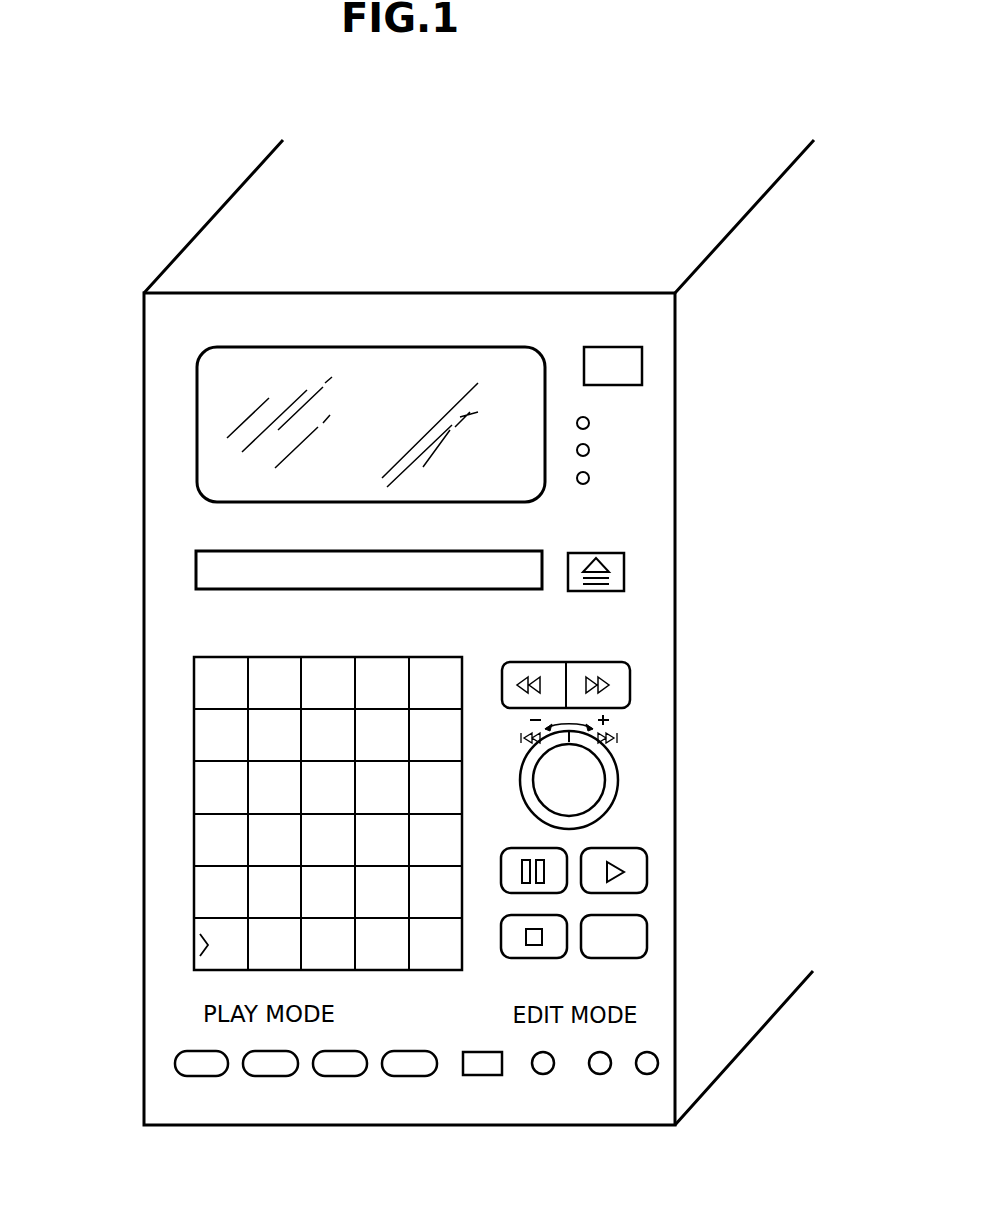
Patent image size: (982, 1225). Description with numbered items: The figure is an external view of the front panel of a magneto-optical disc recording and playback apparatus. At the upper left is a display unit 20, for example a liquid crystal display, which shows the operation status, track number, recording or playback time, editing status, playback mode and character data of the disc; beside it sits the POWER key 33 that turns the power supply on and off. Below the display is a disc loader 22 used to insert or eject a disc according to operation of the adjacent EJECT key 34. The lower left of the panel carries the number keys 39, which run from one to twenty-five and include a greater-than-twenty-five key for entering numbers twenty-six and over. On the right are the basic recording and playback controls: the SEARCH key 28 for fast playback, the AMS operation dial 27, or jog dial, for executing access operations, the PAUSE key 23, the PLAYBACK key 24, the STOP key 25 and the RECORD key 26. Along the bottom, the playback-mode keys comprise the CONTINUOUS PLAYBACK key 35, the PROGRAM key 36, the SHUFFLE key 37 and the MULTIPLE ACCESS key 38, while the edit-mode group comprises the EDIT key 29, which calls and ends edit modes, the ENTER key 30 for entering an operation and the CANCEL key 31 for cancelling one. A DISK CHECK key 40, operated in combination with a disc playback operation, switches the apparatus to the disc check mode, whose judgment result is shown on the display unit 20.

The display unit 20 is at (197, 380).
The disc loader 22 is at (196, 568).
The PAUSE key 23 is at (563, 849).
The PLAYBACK key 24 is at (647, 870).
The STOP key 25 is at (563, 956).
The RECORD key 26 is at (647, 928).
The AMS operation dial 27 is at (597, 780).
The SEARCH key 28 is at (630, 686).
The EDIT key 29 is at (554, 1060).
The ENTER key 30 is at (600, 1052).
The CANCEL key 31 is at (658, 1063).
The POWER key 33 is at (642, 372).
The EJECT key 34 is at (624, 572).
The CONTINUOUS PLAYBACK key 35 is at (200, 1076).
The PROGRAM key 36 is at (267, 1076).
The SHUFFLE key 37 is at (332, 1076).
The MULTIPLE ACCESS key 38 is at (404, 1076).
The number keys 39 is at (192, 730).
The DISK CHECK key 40 is at (502, 1060).